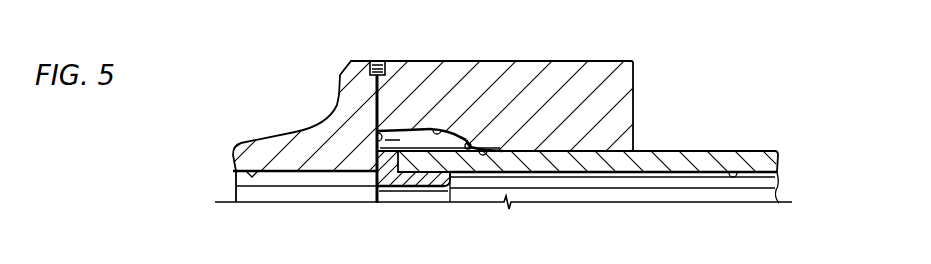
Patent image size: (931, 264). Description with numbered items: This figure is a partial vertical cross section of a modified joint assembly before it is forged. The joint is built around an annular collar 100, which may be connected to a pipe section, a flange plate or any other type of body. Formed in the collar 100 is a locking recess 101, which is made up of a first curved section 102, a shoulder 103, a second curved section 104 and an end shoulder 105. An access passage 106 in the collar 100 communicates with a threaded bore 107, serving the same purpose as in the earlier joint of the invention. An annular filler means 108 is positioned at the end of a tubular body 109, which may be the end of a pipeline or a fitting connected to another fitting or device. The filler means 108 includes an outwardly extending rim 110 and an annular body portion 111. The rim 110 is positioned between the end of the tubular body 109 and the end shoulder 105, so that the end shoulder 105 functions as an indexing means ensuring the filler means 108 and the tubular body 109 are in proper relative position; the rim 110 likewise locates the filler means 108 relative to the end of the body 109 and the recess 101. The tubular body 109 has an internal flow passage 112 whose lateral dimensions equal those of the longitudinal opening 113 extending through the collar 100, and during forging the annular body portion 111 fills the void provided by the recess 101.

The annular collar 100 is at (634, 97).
The locking recess 101 is at (410, 130).
The first curved section 102 is at (455, 130).
The shoulder 103 is at (470, 142).
The second curved section 104 is at (506, 147).
The end shoulder 105 is at (335, 113).
The access passage 106 is at (373, 90).
The threaded bore 107 is at (379, 61).
The annular filler means 108 is at (366, 215).
The tubular body 109 is at (664, 164).
The outwardly extending rim 110 is at (353, 171).
The annular body portion 111 is at (431, 188).
The internal flow passage 112 is at (748, 172).
The longitudinal opening 113 is at (238, 145).